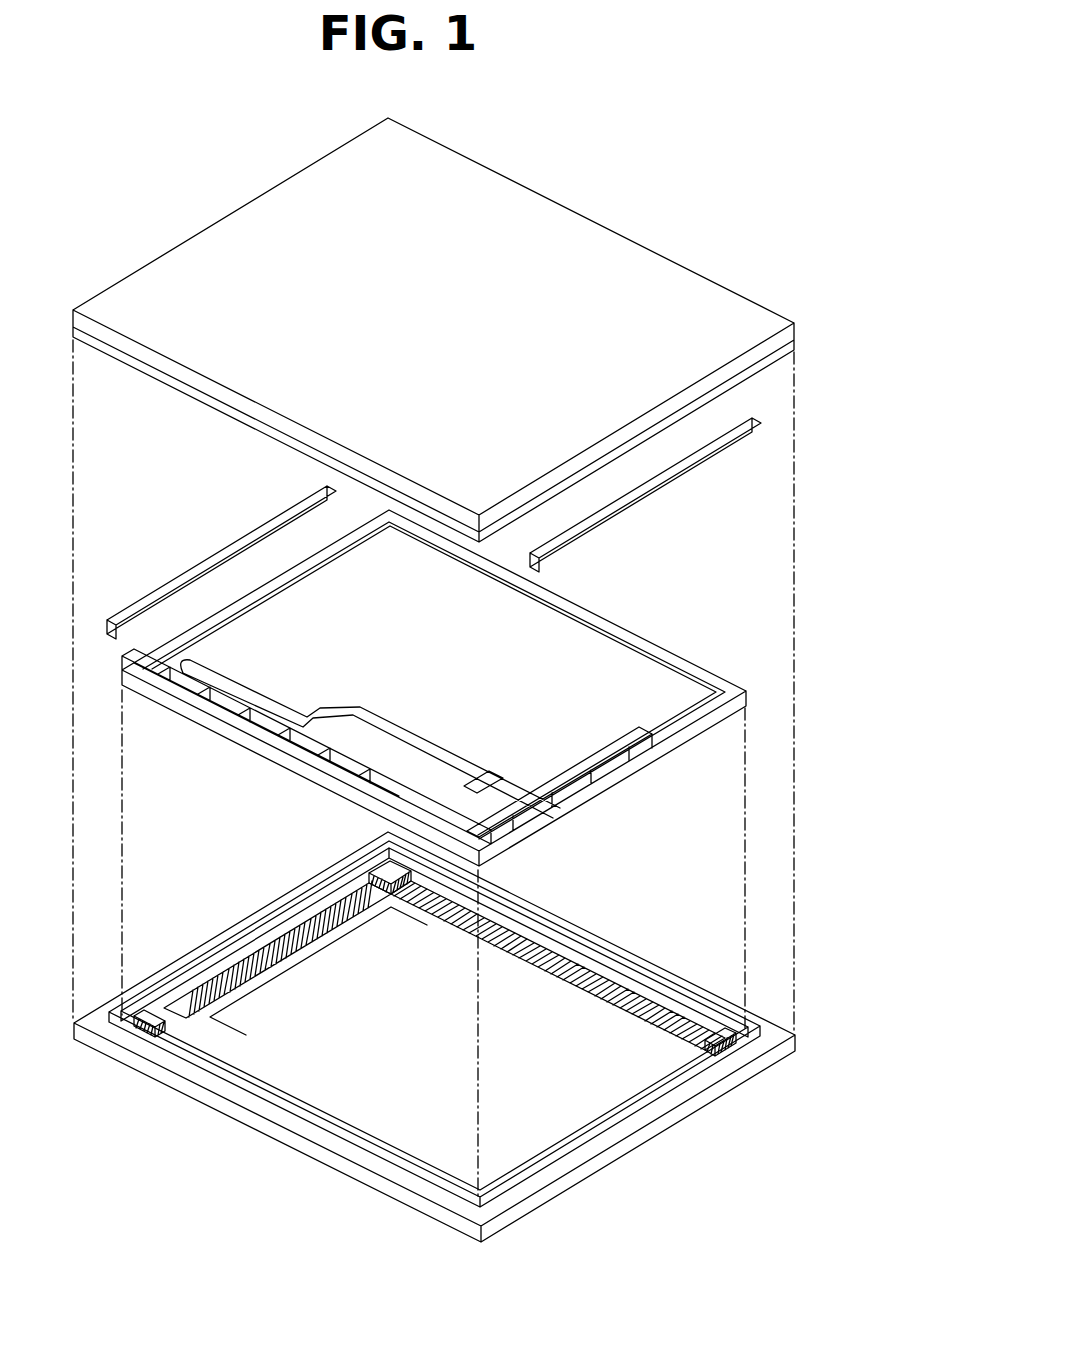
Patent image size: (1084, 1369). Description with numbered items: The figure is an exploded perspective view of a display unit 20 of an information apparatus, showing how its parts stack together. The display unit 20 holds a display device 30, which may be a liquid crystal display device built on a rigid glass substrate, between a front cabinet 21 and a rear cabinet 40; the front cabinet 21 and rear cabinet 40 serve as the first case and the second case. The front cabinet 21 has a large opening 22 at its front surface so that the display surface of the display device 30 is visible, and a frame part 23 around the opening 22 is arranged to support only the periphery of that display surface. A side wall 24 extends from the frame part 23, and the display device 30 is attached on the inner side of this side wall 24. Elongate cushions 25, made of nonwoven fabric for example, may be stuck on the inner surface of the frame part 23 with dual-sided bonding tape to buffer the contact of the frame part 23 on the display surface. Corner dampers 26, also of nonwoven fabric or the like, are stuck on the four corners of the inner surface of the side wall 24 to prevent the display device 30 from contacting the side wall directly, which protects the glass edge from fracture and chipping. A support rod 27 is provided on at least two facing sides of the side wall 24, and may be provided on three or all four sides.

The display unit 20 is at (897, 535).
The front cabinet 21 is at (735, 1088).
The opening 22 is at (580, 1100).
The frame part 23 is at (608, 1018).
The side wall 24 is at (212, 960).
The cushions 25 is at (293, 950).
The corner dampers 26 is at (362, 868).
The support rod 27 is at (168, 577).
The display device 30 is at (675, 647).
The rear cabinet 40 is at (677, 260).